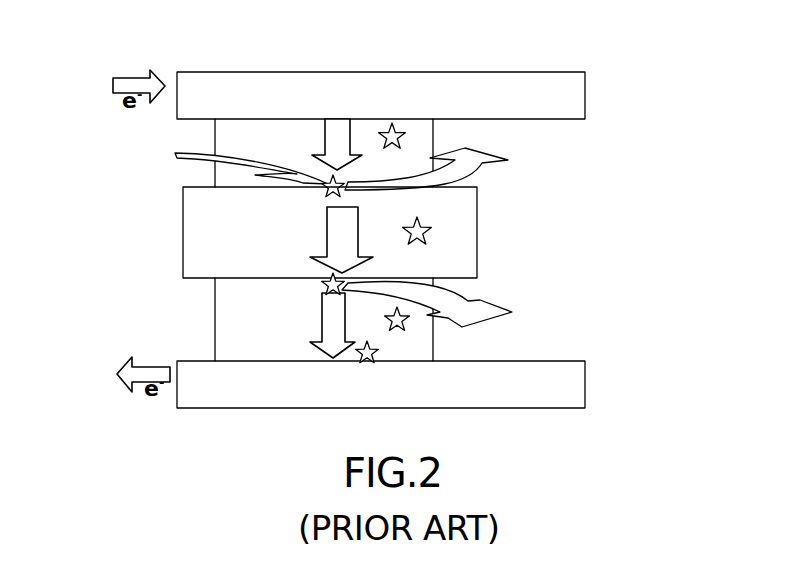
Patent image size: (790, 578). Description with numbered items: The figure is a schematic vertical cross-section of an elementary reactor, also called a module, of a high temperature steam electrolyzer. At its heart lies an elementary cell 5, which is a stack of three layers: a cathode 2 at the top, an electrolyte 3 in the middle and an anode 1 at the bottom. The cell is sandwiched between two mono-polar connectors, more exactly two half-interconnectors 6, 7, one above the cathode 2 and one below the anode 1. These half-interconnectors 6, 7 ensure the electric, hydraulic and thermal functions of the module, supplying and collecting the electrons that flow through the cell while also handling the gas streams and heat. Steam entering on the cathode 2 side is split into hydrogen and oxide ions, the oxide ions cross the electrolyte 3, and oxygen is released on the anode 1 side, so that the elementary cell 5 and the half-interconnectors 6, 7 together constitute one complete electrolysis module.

The anode 1 is at (395, 318).
The cathode 2 is at (537, 120).
The electrolyte 3 is at (537, 193).
The elementary cell 5 is at (377, 241).
The half-interconnector 6 is at (572, 92).
The half-interconnector 7 is at (570, 373).